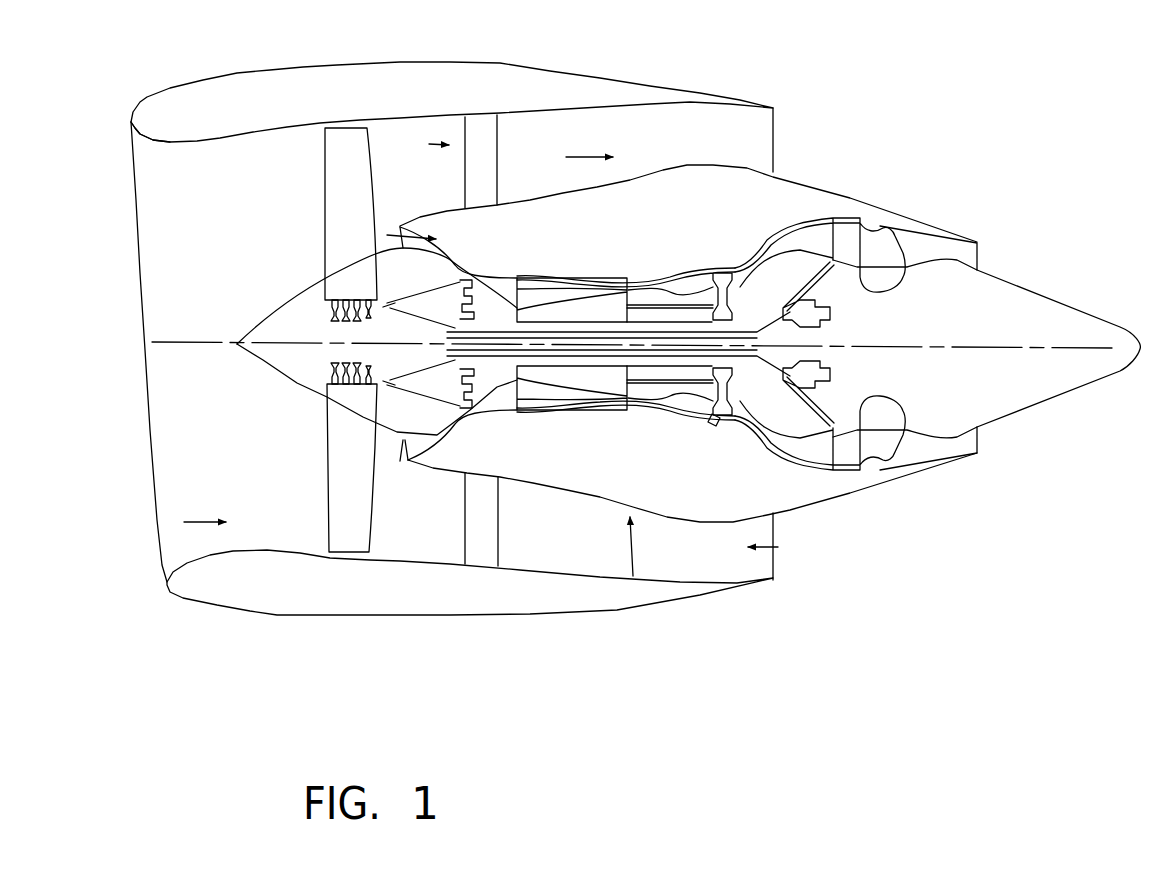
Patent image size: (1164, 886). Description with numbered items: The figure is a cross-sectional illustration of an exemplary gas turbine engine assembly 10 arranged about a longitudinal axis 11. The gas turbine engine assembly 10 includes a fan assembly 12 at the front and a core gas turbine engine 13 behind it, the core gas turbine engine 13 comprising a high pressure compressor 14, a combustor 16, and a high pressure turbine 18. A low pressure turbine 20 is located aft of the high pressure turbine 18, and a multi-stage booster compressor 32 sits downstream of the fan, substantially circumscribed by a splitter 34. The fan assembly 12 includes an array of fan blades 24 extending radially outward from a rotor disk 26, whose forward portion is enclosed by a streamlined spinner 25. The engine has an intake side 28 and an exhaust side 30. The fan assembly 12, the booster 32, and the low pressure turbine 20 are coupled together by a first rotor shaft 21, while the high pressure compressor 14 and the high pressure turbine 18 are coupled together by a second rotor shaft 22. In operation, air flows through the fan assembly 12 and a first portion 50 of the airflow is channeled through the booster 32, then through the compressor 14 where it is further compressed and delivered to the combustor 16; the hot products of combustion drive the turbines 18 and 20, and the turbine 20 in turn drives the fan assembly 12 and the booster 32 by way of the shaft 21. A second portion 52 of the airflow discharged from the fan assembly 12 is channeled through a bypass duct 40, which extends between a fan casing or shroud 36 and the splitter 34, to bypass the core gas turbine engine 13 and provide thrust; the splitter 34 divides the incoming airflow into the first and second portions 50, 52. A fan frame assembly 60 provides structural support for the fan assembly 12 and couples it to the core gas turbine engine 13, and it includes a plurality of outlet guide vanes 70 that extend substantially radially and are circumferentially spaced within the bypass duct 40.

The gas turbine engine assembly 10 is at (701, 58).
The longitudinal axis 11 is at (233, 352).
The fan assembly 12 is at (346, 476).
The core gas turbine engine 13 is at (633, 575).
The high pressure compressor 14 is at (535, 290).
The combustor 16 is at (683, 287).
The high pressure turbine 18 is at (717, 420).
The low pressure turbine 20 is at (800, 237).
The first rotor shaft 21 is at (505, 412).
The second rotor shaft 22 is at (687, 313).
The fan blades 24 is at (338, 203).
The spinner 25 is at (292, 395).
The rotor disk 26 is at (332, 302).
The intake side 28 is at (185, 522).
The exhaust side 30 is at (778, 547).
The booster compressor 32 is at (447, 246).
The splitter 34 is at (409, 462).
The fan casing 36 is at (282, 130).
The bypass duct 40 is at (696, 149).
The first portion of the airflow 50 is at (400, 226).
The second portion of the airflow 52 is at (578, 157).
The fan frame assembly 60 is at (430, 143).
The outlet guide vanes 70 is at (488, 527).